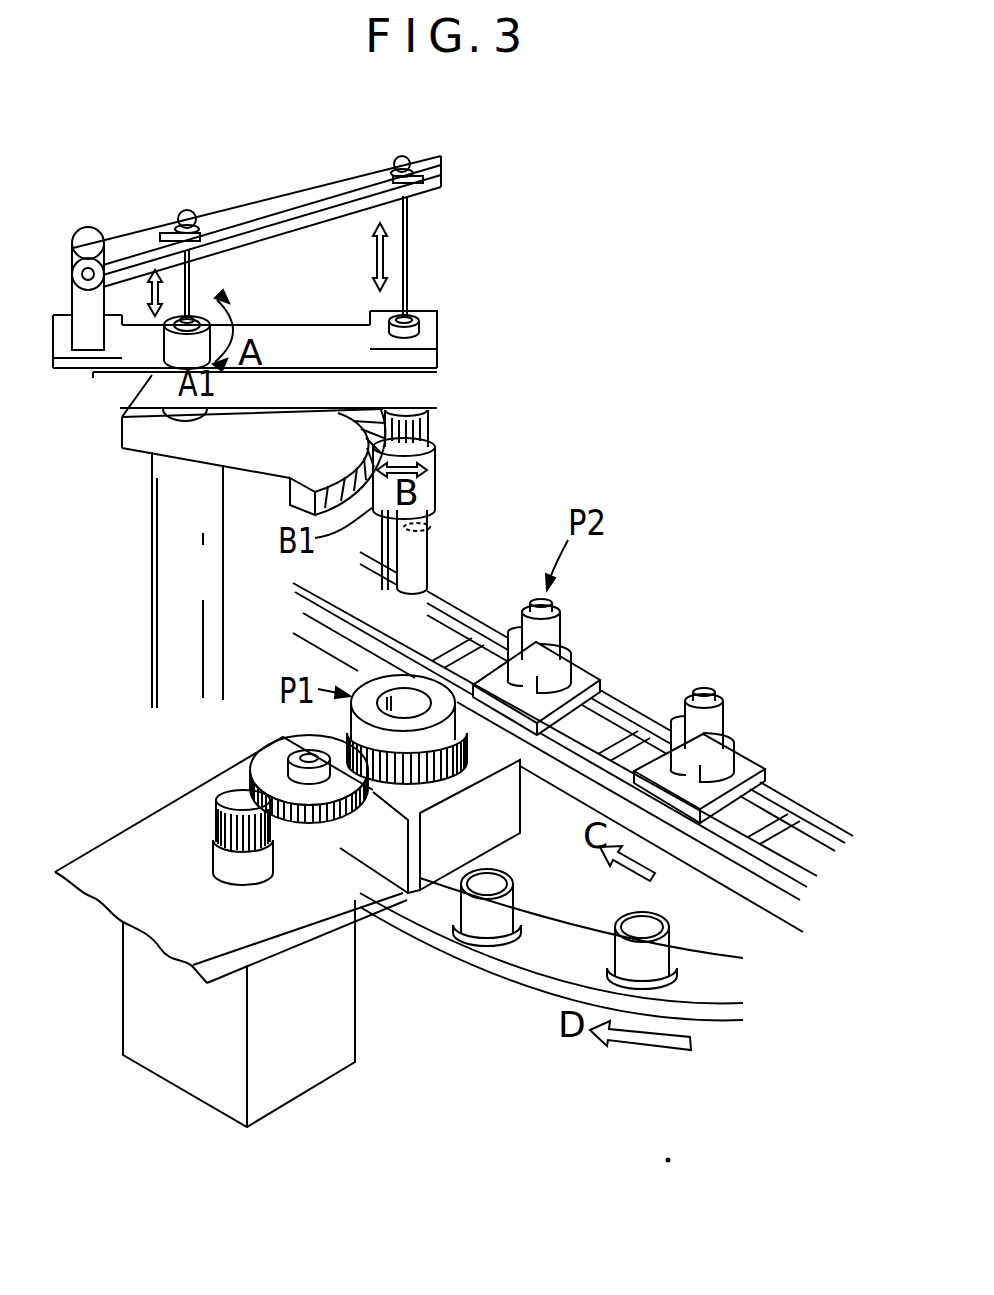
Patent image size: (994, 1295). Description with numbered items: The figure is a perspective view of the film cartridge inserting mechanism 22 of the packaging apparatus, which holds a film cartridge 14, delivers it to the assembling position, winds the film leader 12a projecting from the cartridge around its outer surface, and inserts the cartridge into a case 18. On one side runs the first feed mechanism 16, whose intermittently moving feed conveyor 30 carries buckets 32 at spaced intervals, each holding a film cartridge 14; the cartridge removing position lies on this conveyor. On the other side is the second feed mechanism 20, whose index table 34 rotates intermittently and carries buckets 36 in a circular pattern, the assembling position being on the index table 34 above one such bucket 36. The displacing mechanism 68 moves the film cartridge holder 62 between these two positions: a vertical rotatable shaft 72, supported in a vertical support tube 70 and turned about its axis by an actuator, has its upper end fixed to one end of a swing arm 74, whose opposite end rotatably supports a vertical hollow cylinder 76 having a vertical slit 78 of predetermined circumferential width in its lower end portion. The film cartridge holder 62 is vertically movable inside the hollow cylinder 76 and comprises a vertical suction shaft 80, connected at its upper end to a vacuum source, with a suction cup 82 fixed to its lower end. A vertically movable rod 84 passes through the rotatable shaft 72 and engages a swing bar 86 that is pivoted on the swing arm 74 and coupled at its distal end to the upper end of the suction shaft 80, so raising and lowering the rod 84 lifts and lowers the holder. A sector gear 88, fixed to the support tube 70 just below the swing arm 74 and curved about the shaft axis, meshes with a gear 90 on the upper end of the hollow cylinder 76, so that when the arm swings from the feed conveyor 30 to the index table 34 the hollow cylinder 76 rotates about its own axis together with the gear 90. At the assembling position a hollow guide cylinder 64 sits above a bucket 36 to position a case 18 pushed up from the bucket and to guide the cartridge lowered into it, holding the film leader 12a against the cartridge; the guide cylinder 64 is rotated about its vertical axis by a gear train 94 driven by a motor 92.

The film leader 12a is at (605, 675).
The film cartridge 14 is at (562, 600).
The first feed mechanism 16 is at (805, 807).
The case 18 is at (502, 876).
The second feed mechanism 20 is at (722, 1024).
The film cartridge inserting mechanism 22 is at (643, 395).
The feed conveyor 30 is at (753, 807).
The bucket 32 is at (568, 656).
The index table 34 is at (458, 957).
The bucket 36 is at (521, 940).
The film cartridge holder 62 is at (438, 496).
The guide cylinder 64 is at (452, 775).
The displacing mechanism 68 is at (149, 406).
The support tube 70 is at (150, 672).
The rotatable shaft 72 is at (150, 456).
The swing arm 74 is at (290, 336).
The vertical hollow cylinder 76 is at (418, 574).
The vertical slit 78 is at (362, 567).
The suction shaft 80 is at (408, 237).
The suction cup 82 is at (431, 527).
The vertically movable rod 84 is at (192, 276).
The swing bar 86 is at (300, 191).
The sector gear 88 is at (358, 425).
The gear 90 is at (424, 427).
The motor 92 is at (322, 1052).
The gear train 94 is at (318, 796).